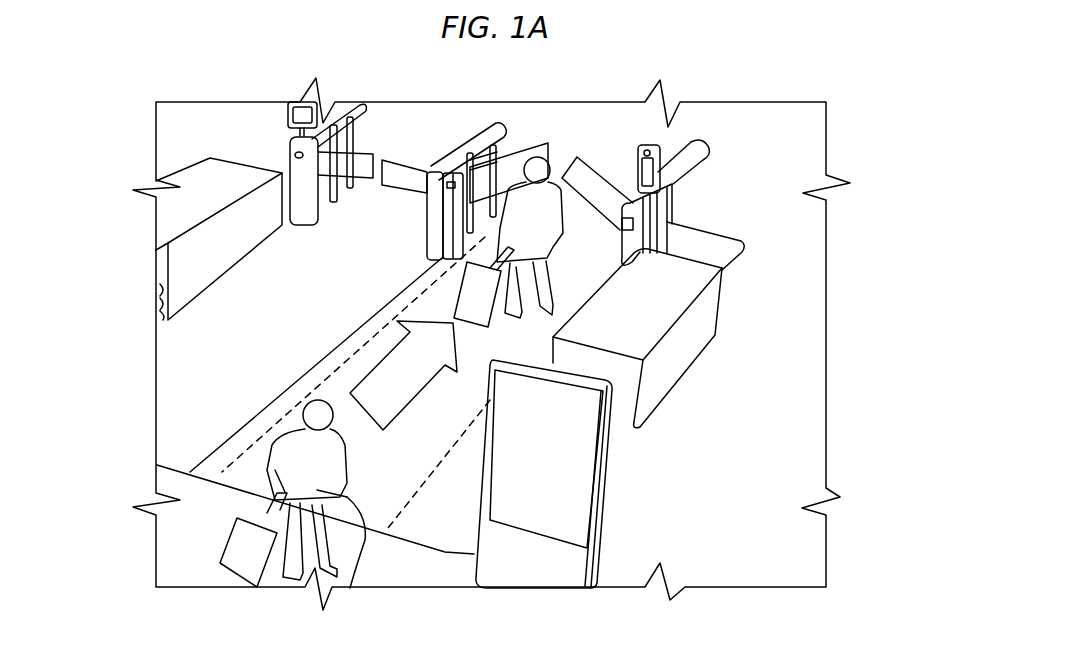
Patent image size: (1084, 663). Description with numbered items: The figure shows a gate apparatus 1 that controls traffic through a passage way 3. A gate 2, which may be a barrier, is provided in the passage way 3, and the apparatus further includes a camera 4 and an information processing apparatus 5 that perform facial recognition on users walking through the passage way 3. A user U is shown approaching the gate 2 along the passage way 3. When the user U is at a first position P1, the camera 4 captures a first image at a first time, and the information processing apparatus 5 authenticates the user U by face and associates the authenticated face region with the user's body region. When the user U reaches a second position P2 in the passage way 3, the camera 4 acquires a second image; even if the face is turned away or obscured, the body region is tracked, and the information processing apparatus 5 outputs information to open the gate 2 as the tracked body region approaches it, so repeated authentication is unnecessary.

The gate apparatus 1 is at (858, 143).
The gate 2 is at (555, 157).
The passage way 3 is at (358, 385).
The camera 4 is at (650, 143).
The information processing apparatus 5 is at (695, 181).
The user U is at (350, 588).
The first position P1 is at (260, 507).
The second position P2 is at (563, 277).